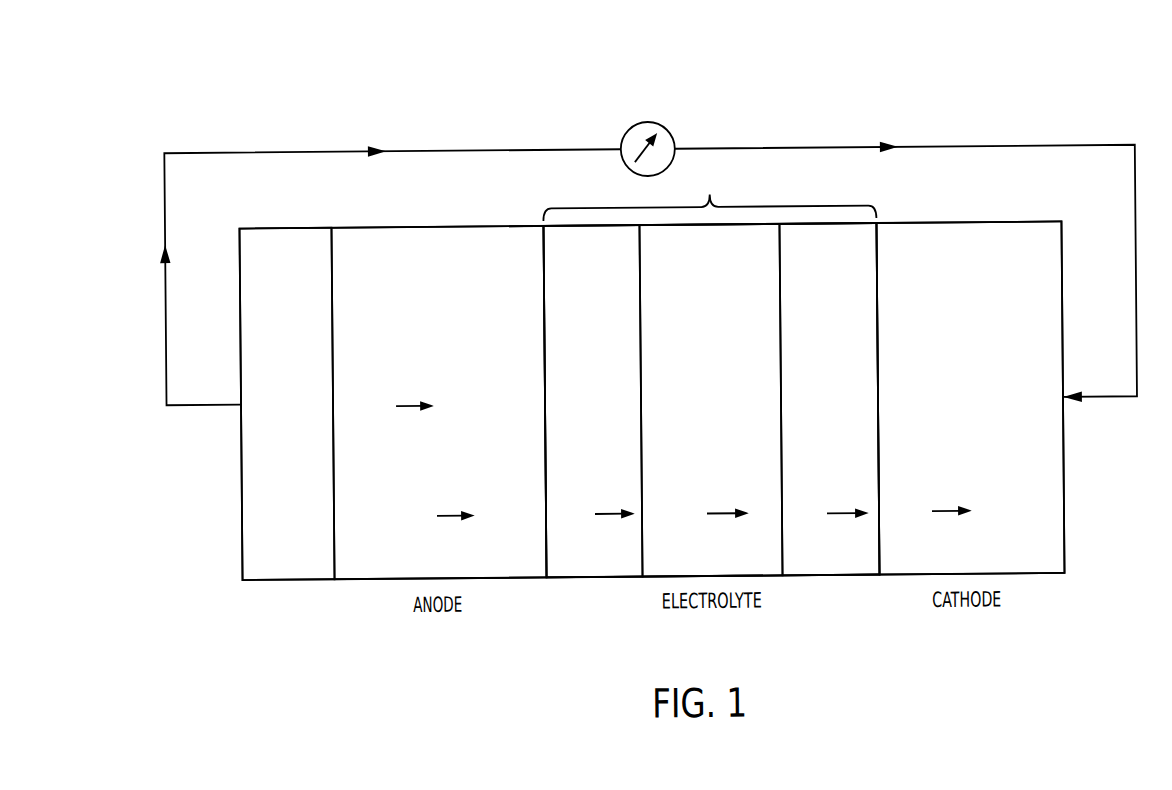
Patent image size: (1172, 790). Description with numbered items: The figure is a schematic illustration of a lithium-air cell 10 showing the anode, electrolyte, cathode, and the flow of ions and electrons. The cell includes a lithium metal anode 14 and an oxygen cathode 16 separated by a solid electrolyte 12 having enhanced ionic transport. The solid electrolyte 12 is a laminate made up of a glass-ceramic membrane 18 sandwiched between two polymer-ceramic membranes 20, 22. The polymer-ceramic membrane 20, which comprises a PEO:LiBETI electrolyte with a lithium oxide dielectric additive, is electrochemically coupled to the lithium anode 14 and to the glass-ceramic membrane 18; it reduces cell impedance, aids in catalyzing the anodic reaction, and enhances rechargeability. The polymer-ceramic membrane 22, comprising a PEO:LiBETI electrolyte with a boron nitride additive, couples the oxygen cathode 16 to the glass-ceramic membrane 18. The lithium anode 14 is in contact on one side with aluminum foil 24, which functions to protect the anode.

The lithium-air cell 10 is at (1052, 109).
The solid electrolyte 12 is at (711, 371).
The lithium metal anode 14 is at (364, 577).
The oxygen cathode 16 is at (1016, 576).
The glass-ceramic membrane 18 is at (766, 576).
The polymer-ceramic membrane 20 is at (592, 579).
The polymer-ceramic membrane 22 is at (826, 576).
The aluminum foil 24 is at (280, 577).